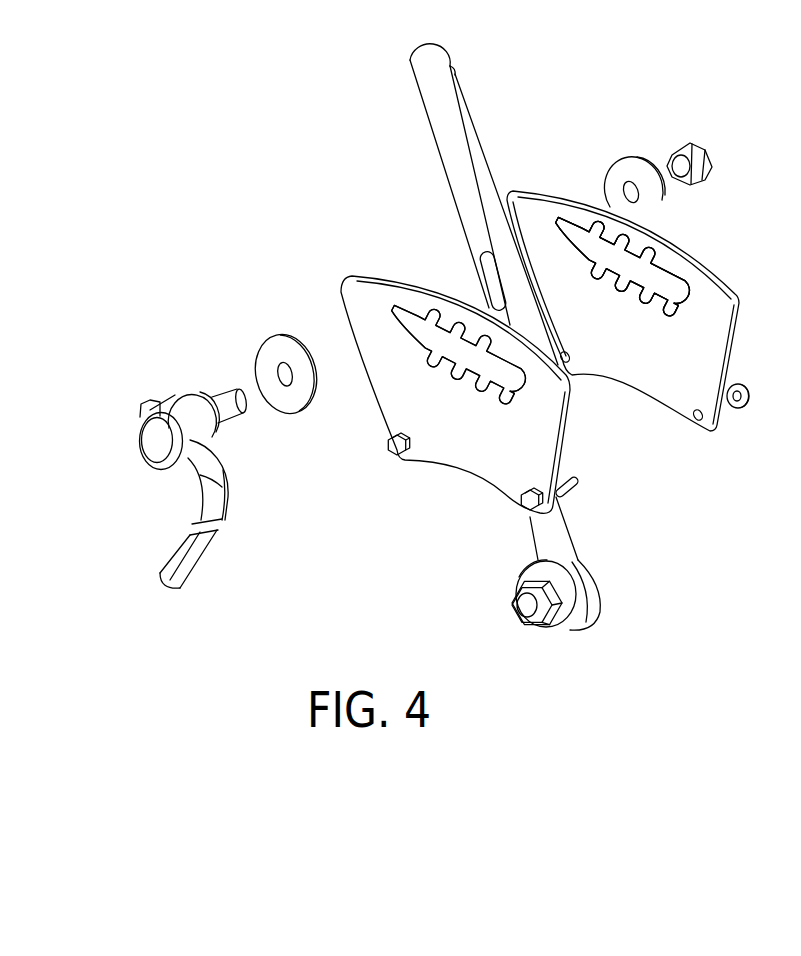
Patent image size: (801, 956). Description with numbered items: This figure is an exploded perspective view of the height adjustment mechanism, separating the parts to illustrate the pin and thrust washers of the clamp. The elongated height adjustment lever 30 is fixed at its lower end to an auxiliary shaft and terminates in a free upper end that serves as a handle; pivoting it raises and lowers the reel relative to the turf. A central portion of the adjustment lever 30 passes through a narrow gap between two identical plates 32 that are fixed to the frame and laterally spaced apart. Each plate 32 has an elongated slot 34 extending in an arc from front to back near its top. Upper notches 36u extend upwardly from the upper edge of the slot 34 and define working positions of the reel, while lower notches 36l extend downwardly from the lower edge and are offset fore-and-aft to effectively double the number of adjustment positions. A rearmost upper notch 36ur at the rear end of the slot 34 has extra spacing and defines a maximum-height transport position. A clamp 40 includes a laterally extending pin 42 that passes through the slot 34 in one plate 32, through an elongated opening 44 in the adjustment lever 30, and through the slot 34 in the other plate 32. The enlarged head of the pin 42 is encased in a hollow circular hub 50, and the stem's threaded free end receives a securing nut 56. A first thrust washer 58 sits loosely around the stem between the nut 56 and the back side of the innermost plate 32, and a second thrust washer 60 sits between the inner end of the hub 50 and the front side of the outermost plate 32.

The height adjustment lever 30 is at (437, 125).
The plate 32 is at (474, 431).
The elongated slot 34 is at (513, 378).
The upper notches 36u is at (660, 258).
The lower notches 36l is at (648, 304).
The rearmost upper notch 36ur is at (393, 304).
The clamp 40 is at (243, 524).
The pin 42 is at (216, 396).
The elongated opening 44 is at (482, 252).
The hollow circular hub 50 is at (158, 448).
The securing nut 56 is at (681, 142).
The first thrust washer 58 is at (606, 170).
The second thrust washer 60 is at (298, 400).